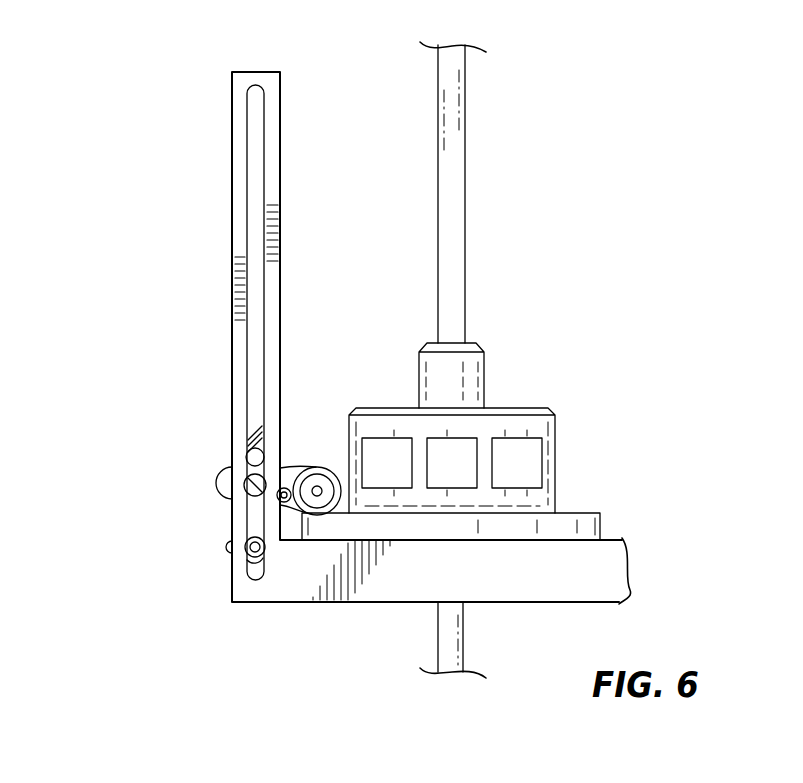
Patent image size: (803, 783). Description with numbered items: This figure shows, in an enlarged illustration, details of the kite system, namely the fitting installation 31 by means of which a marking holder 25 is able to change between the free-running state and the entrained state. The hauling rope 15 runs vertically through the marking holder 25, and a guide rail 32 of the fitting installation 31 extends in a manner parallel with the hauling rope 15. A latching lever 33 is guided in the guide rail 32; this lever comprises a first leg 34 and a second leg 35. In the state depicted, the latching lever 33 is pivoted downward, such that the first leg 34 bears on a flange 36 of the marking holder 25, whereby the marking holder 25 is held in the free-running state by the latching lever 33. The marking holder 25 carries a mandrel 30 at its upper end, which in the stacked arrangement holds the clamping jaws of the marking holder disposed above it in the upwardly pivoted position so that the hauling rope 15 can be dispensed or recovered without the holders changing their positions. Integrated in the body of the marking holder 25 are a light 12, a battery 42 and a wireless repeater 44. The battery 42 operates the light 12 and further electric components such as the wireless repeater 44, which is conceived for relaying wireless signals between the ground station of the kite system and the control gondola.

The fitting installation 31 is at (132, 283).
The guide rail 32 is at (232, 179).
The latching lever 33 is at (218, 483).
The first leg 34 is at (328, 468).
The second leg 35 is at (226, 550).
The flange 36 is at (600, 522).
The marking holder 25 is at (555, 430).
The light 12 is at (405, 458).
The wireless repeater 44 is at (462, 447).
The battery 42 is at (518, 475).
The mandrel 30 is at (483, 363).
The hauling rope 15 is at (465, 143).